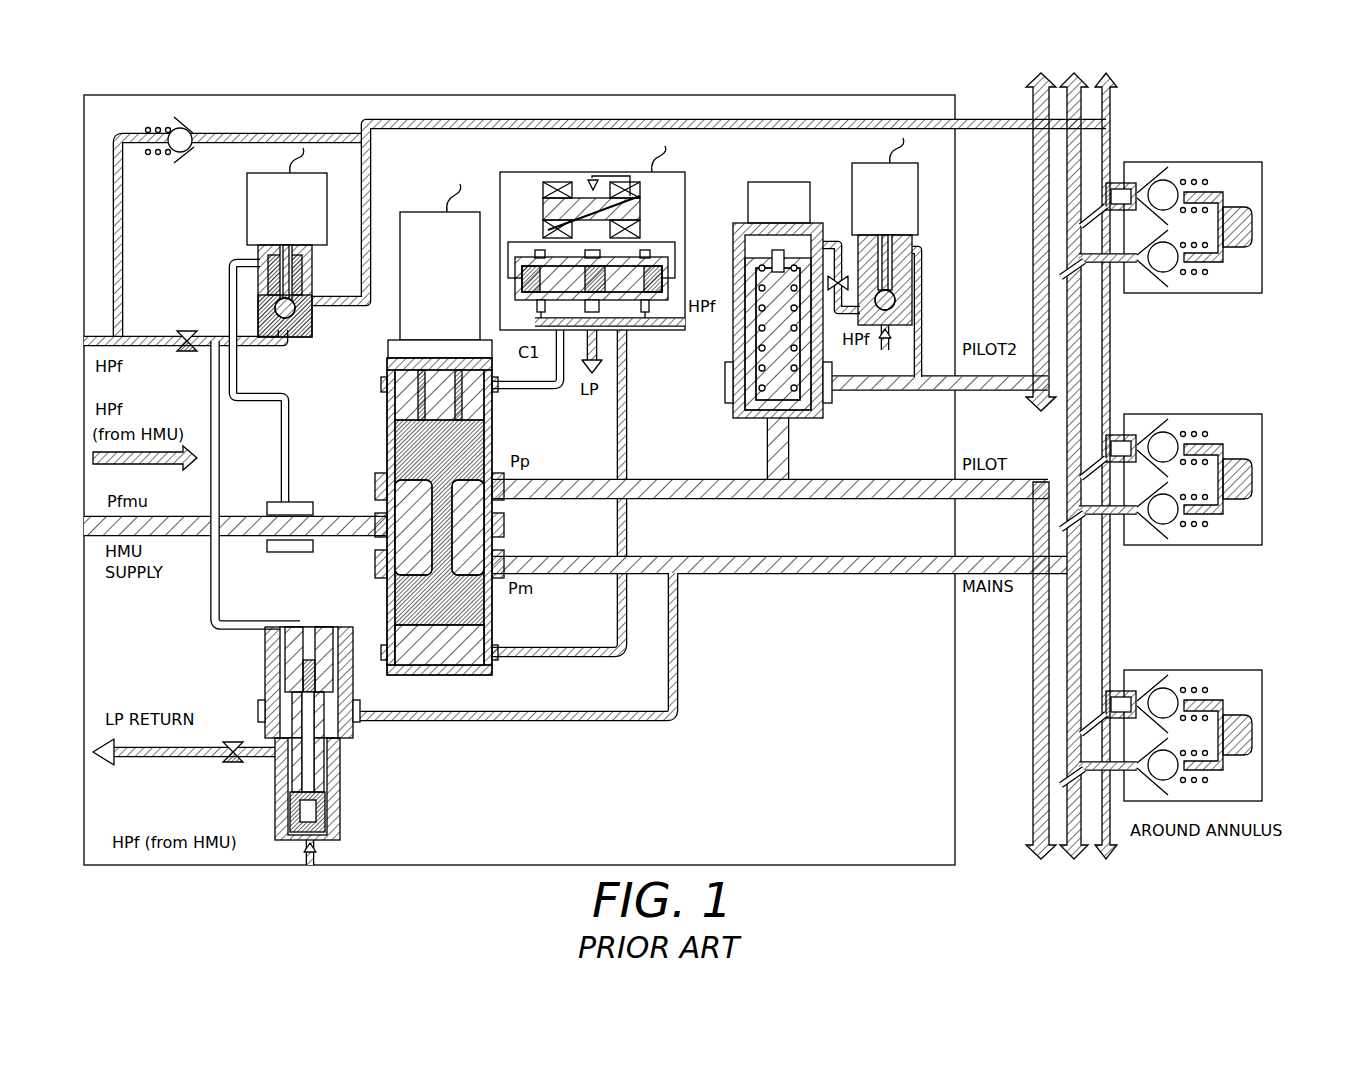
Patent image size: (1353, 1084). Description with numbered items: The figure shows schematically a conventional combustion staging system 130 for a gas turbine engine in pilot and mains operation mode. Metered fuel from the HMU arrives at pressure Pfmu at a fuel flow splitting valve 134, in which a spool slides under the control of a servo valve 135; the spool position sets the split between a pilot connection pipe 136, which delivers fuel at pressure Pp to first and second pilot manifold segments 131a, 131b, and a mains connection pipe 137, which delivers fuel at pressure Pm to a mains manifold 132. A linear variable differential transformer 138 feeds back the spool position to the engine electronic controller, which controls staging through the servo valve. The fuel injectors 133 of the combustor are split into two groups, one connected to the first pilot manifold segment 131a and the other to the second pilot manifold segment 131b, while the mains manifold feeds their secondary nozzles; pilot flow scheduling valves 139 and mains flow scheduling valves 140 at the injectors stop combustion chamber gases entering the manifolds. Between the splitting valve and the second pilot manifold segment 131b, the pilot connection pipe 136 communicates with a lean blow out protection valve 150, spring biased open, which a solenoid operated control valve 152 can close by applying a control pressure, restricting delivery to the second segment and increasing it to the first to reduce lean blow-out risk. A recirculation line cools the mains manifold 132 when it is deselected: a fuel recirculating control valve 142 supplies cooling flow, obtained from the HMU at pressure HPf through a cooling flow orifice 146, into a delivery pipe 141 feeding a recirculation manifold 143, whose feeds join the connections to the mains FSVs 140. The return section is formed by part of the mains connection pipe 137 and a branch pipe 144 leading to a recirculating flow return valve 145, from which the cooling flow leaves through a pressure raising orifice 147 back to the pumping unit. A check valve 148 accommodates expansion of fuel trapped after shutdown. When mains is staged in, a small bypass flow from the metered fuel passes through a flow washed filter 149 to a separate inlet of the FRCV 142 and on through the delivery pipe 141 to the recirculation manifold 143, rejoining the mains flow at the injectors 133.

The combustion staging system 130 is at (603, 88).
The first pilot manifold segment 131a is at (1033, 740).
The second pilot manifold segment 131b is at (1033, 262).
The mains manifold 132 is at (1085, 362).
The fuel injectors 133 is at (1161, 425).
The fuel flow splitting valve 134 is at (384, 420).
The servo valve 135 is at (525, 170).
The pilot connection pipe 136 is at (672, 479).
The mains connection pipe 137 is at (836, 574).
The linear variable differential transformer 138 is at (440, 271).
The pilot flow scheduling valve 139 is at (1158, 280).
The mains flow scheduling valve 140 is at (1152, 178).
The delivery pipe 141 is at (867, 120).
The fuel recirculating control valve 142 is at (320, 328).
The recirculation manifold 143 is at (1112, 597).
The branch pipe 144 is at (556, 721).
The recirculating flow return valve 145 is at (350, 773).
The cooling flow orifice 146 is at (187, 330).
The pressure raising orifice 147 is at (233, 741).
The check valve 148 is at (200, 152).
The flow washed filter 149 is at (285, 554).
The lean blow out protection valve 150 is at (732, 267).
The solenoid operated control valve 152 is at (912, 252).